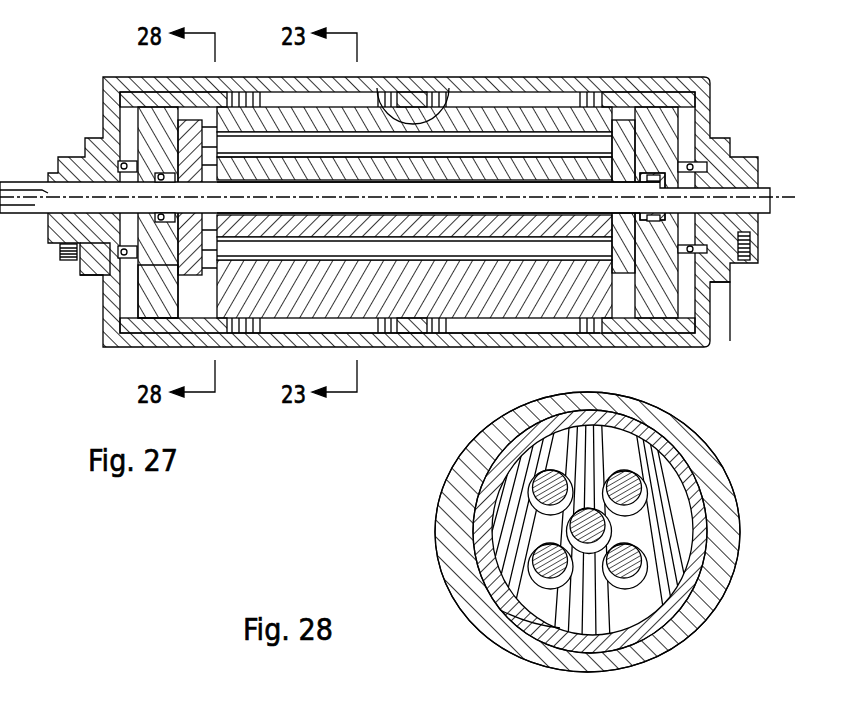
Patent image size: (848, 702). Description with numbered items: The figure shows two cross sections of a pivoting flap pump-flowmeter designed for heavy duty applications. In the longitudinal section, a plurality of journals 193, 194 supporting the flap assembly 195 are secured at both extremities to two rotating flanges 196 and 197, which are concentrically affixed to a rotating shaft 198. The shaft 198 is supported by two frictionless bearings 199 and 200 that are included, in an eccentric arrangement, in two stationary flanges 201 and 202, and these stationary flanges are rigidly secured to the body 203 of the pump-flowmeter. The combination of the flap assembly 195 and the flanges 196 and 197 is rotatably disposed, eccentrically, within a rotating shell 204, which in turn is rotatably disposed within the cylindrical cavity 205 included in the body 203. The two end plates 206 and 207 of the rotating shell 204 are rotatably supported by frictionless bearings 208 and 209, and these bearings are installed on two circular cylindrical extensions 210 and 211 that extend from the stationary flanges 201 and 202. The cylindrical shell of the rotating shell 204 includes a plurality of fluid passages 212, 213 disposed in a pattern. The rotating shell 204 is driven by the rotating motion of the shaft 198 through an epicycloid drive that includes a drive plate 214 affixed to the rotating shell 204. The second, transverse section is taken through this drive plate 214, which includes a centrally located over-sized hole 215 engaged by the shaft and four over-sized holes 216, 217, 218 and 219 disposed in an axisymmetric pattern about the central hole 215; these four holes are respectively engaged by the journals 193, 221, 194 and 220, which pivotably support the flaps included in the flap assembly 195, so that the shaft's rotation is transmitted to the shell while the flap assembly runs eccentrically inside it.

In FIG. 27, the journal 193 is at (488, 145).
In FIG. 28, the journal 193 is at (678, 445).
In FIG. 27, the journal 194 is at (465, 248).
In FIG. 28, the journal 194 is at (500, 557).
In FIG. 27, the flap assembly 195 is at (428, 168).
In FIG. 27, the rotating flange 196 is at (183, 135).
In FIG. 27, the rotating flange 197 is at (640, 137).
In FIG. 27, the rotating shaft 198 is at (347, 200).
In FIG. 28, the rotating shaft 198 is at (567, 531).
In FIG. 27, the frictionless bearing 199 is at (105, 275).
In FIG. 27, the frictionless bearing 200 is at (660, 242).
In FIG. 27, the stationary flange 201 is at (157, 270).
In FIG. 27, the stationary flange 202 is at (708, 303).
In FIG. 27, the body 203 is at (550, 85).
In FIG. 28, the body 203 is at (713, 567).
In FIG. 27, the rotating shell 204 is at (641, 337).
In FIG. 28, the rotating shell 204 is at (697, 512).
In FIG. 27, the cylindrical cavity 205 is at (383, 88).
In FIG. 27, the end plate 206 is at (113, 143).
In FIG. 27, the end plate 207 is at (707, 100).
In FIG. 27, the frictionless bearing 208 is at (110, 262).
In FIG. 27, the frictionless bearing 209 is at (700, 123).
In FIG. 27, the circular cylindrical extension 210 is at (97, 223).
In FIG. 27, the circular cylindrical extension 211 is at (727, 187).
In FIG. 27, the fluid passage 212 is at (283, 330).
In FIG. 27, the fluid passage 213 is at (503, 335).
In FIG. 27, the drive plate 214 is at (258, 77).
In FIG. 28, the drive plate 214 is at (677, 623).
In FIG. 28, the centrally located over-sized hole 215 is at (533, 570).
In FIG. 28, the over-sized hole 216 is at (638, 500).
In FIG. 28, the over-sized hole 217 is at (635, 578).
In FIG. 28, the over-sized hole 218 is at (500, 610).
In FIG. 28, the over-sized hole 219 is at (540, 505).
In FIG. 28, the journal 220 is at (530, 487).
In FIG. 28, the journal 221 is at (637, 553).